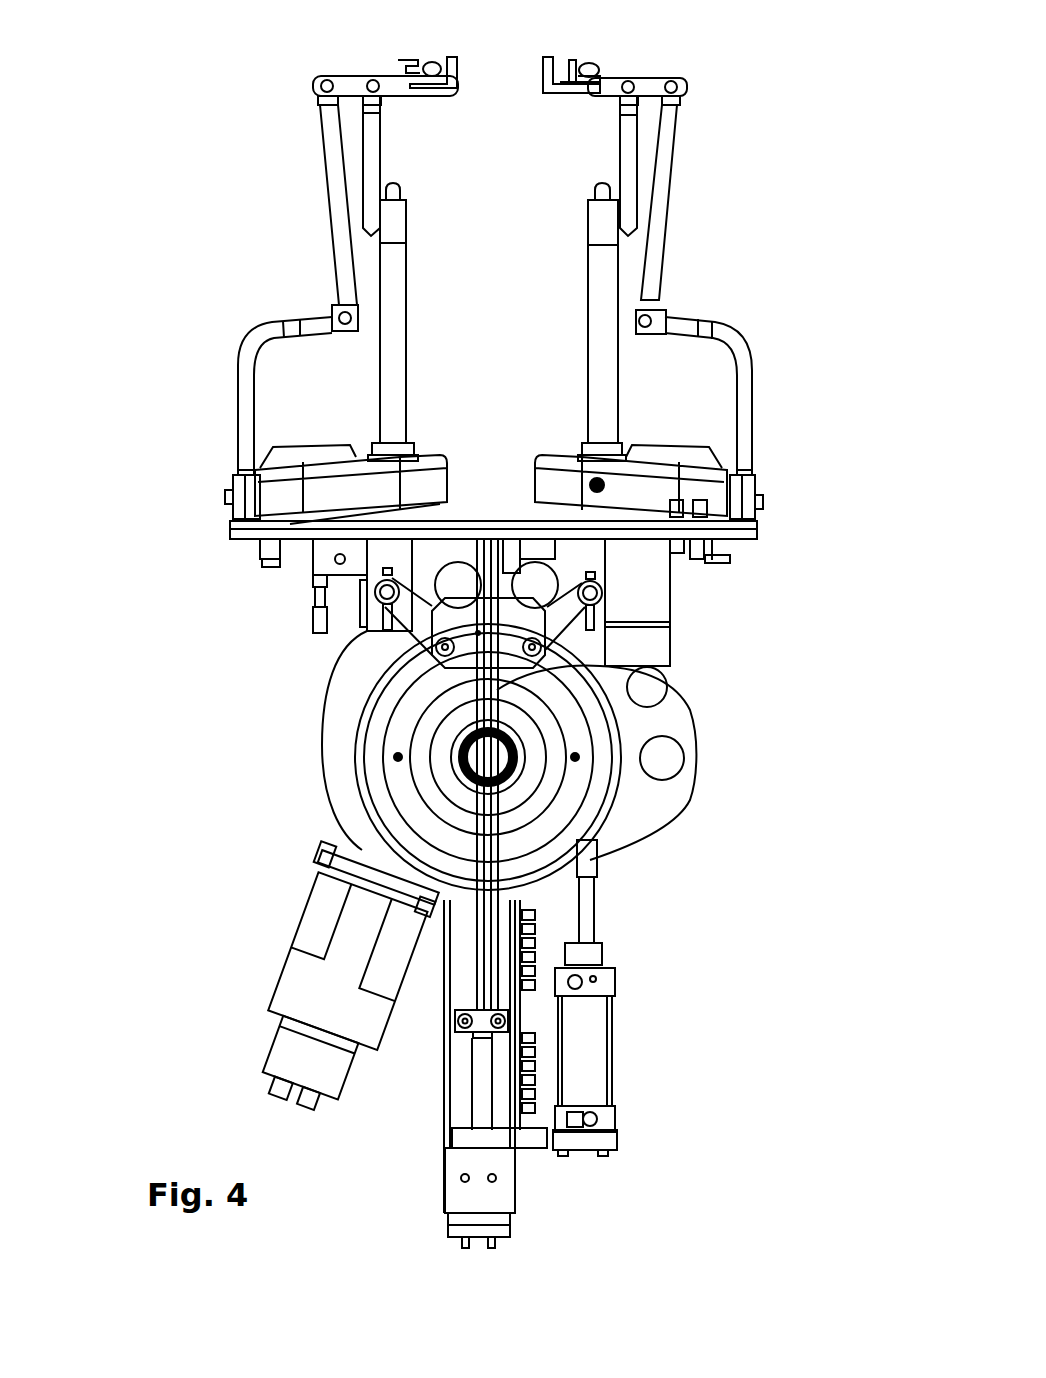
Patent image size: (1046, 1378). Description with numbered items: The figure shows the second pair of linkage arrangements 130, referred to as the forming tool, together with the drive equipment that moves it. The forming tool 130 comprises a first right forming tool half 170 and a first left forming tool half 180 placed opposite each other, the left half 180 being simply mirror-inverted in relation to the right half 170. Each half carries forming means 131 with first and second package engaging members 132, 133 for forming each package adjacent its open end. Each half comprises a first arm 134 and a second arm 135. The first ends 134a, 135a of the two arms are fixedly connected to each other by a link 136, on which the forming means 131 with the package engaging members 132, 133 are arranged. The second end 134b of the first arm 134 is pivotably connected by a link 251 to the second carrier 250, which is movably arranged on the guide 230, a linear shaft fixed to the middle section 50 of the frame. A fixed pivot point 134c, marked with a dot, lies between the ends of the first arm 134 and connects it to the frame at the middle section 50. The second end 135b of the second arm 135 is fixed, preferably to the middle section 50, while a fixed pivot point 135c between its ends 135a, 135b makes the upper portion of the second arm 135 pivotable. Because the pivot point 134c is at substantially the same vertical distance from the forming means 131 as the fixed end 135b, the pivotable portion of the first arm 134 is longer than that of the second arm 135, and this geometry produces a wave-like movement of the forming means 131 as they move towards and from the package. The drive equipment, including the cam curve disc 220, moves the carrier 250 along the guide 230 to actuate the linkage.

The middle section 50 is at (257, 548).
The second pair of linkage arrangements 130 is at (245, 119).
The forming means 131 is at (518, 47).
The first package engaging member 132 is at (542, 80).
The second package engaging member 133 is at (568, 52).
The first arm 134 is at (583, 310).
The first end of the first arm 134a is at (615, 108).
The second end of the first arm 134b is at (607, 603).
The fixed pivot point 134c is at (569, 487).
The second arm 135 is at (680, 162).
The first end of the second arm 135a is at (698, 101).
The second end of the second arm 135b is at (797, 503).
The fixed pivot point 135c is at (663, 301).
The link 136 is at (658, 83).
The first right forming tool half 170 is at (767, 317).
The first left forming tool half 180 is at (254, 303).
The cam curve disc 220 is at (342, 793).
The guide 230 is at (612, 704).
The second carrier 250 is at (470, 645).
The link 251 is at (578, 612).